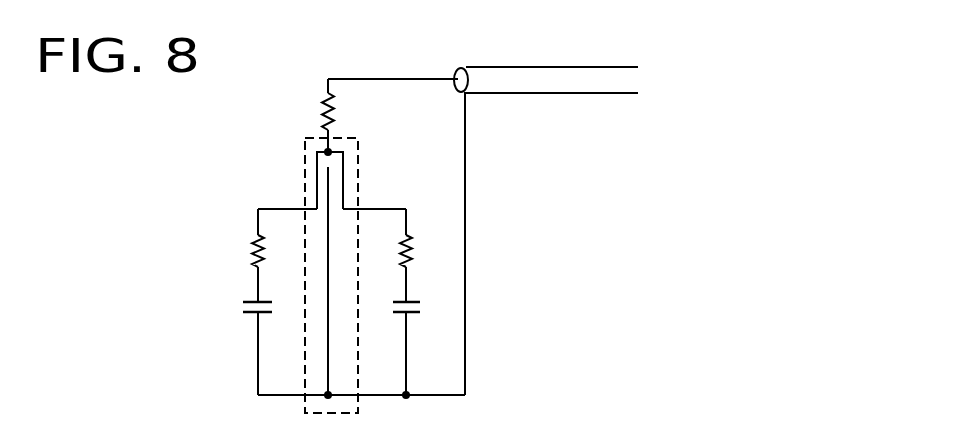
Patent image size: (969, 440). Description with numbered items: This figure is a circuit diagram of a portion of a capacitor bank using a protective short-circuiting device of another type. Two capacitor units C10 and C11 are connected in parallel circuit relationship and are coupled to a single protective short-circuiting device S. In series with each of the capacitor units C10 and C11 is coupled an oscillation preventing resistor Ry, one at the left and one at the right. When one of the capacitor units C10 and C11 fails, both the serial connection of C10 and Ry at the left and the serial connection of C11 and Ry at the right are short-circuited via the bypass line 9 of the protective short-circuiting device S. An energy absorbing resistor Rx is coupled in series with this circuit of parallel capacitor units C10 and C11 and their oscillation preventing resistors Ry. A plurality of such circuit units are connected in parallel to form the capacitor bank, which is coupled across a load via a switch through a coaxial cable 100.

The coaxial cable 100 is at (537, 67).
The bypass line 9 is at (328, 262).
The protective short-circuiting device S is at (305, 413).
The energy absorbing resistor Rx is at (346, 111).
The oscillation preventing resistor Ry is at (325, 251).
The capacitor unit C10 is at (236, 308).
The capacitor unit C11 is at (424, 308).